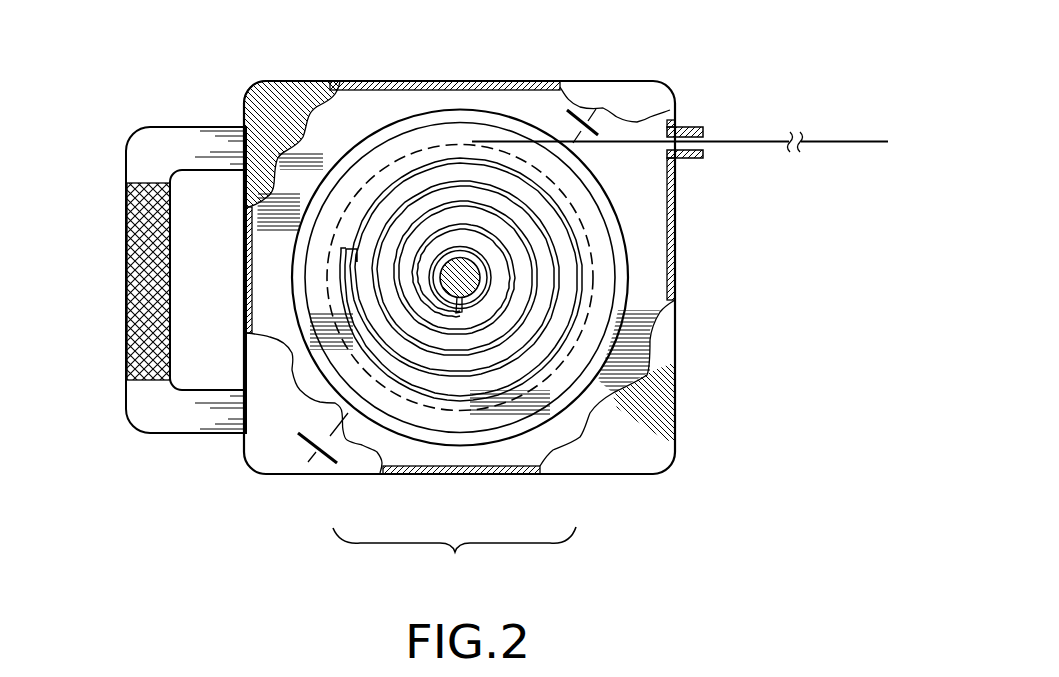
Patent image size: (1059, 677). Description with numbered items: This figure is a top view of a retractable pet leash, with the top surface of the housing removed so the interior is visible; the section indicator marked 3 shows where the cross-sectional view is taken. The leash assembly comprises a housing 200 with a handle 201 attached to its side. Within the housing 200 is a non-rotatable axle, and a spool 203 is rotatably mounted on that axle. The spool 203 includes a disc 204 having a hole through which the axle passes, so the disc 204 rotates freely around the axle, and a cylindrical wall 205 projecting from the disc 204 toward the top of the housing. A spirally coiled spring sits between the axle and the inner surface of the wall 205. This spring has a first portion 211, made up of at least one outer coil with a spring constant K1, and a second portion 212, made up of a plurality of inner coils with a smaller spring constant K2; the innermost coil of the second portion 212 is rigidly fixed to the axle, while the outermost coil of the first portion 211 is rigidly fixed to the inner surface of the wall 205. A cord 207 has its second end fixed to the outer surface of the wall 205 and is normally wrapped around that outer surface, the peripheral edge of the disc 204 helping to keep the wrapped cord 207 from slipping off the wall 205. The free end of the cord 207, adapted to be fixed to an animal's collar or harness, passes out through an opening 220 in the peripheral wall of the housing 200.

The housing 200 is at (362, 82).
The handle 201 is at (126, 290).
The spool 203 is at (454, 555).
The disc 204 is at (403, 476).
The cylindrical wall 205 is at (493, 421).
The cord 207 is at (753, 140).
The first portion of the coiled spring 211 is at (450, 200).
The second portion of the coiled spring 212 is at (475, 182).
The opening 220 is at (703, 146).
The section line 3 is at (439, 276).